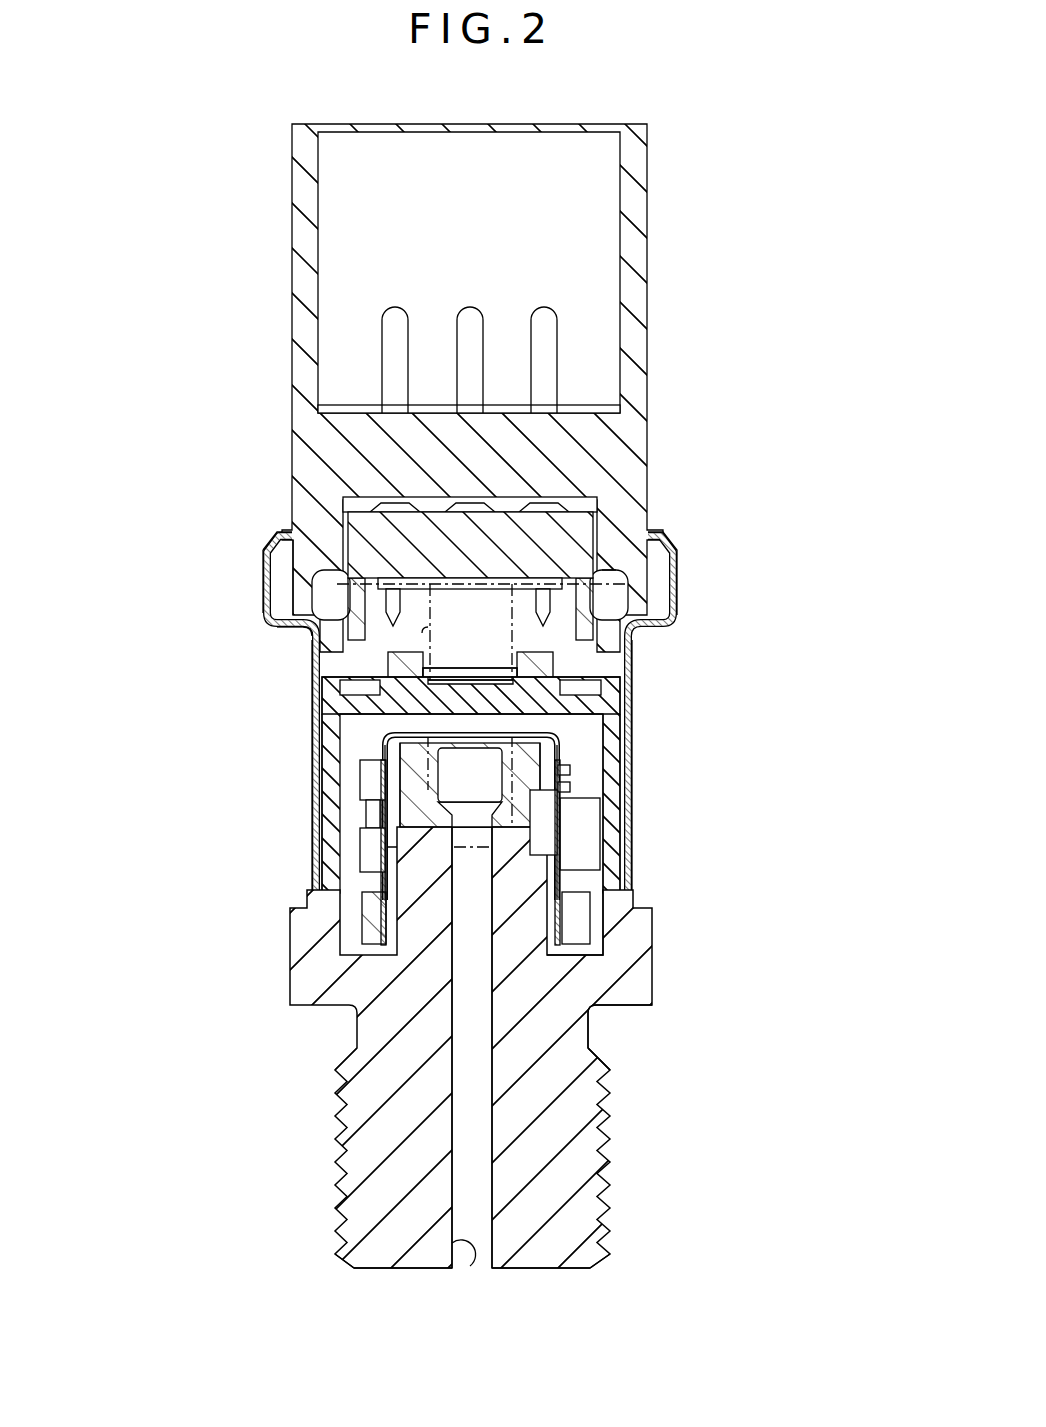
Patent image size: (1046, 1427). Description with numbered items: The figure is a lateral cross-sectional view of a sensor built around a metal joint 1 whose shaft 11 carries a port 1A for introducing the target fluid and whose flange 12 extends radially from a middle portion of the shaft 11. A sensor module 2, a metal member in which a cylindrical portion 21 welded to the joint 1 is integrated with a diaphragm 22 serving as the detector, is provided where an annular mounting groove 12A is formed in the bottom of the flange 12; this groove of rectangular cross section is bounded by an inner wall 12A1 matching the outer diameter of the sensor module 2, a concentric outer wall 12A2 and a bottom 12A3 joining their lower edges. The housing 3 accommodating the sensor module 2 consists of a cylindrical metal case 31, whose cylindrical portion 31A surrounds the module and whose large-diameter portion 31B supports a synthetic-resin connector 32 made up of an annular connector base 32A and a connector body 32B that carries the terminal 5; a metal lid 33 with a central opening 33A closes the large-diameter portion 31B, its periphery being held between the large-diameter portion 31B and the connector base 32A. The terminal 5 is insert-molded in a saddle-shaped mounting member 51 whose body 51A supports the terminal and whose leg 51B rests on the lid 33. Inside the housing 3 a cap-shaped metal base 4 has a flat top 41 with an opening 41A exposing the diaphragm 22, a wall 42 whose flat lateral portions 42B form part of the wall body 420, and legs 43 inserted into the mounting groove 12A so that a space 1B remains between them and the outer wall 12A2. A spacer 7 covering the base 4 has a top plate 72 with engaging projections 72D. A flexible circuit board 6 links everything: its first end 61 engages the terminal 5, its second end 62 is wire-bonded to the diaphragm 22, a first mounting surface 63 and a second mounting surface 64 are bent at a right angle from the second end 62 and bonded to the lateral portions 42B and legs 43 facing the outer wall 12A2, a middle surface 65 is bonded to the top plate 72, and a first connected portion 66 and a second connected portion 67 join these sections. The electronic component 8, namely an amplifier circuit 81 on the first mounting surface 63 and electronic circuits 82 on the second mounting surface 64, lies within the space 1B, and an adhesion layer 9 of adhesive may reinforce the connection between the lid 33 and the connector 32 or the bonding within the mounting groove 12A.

The joint 1 is at (248, 1042).
The port 1A is at (456, 1262).
The space 1B is at (620, 912).
The shaft 11 is at (345, 1093).
The flange 12 is at (345, 1012).
The mounting groove 12A is at (768, 1005).
The inner wall 12A1 is at (595, 968).
The outer wall 12A2 is at (605, 940).
The bottom 12A3 is at (600, 955).
The sensor module 2 is at (560, 780).
The cylindrical portion 21 is at (605, 780).
The diaphragm 22 is at (472, 750).
The housing 3 is at (794, 630).
The case 31 is at (634, 690).
The cylindrical portion 31A is at (330, 688).
The large-diameter portion 31B is at (262, 590).
The connector 32 is at (668, 560).
The connector base 32A is at (265, 548).
The connector body 32B is at (300, 420).
The lid 33 is at (314, 654).
The opening 33A is at (320, 666).
The base 4 is at (360, 760).
The top 41 is at (612, 742).
The opening 41A is at (615, 700).
The wall 42 is at (368, 790).
The wall body 420 is at (372, 812).
The lateral portions 42B is at (370, 848).
The legs 43 is at (370, 920).
The terminal 5 is at (398, 308).
The mounting member 51 is at (204, 436).
The body 51A is at (375, 540).
The leg 51B is at (288, 570).
The flexible circuit board 6 is at (560, 830).
The first end 61 is at (495, 590).
The second end 62 is at (450, 712).
The first mounting surface 63 is at (590, 812).
The second mounting surface 64 is at (372, 766).
The middle surface 65 is at (632, 662).
The first connected portion 66 is at (428, 627).
The second connected portion 67 is at (471, 858).
The spacer 7 is at (428, 669).
The top plate 72 is at (487, 682).
The engaging projections 72D is at (412, 644).
The electronic component 8 is at (600, 870).
The amplifier circuit 81 is at (598, 850).
The electronic circuits 82 is at (370, 860).
The adhesion layer 9 is at (615, 583).